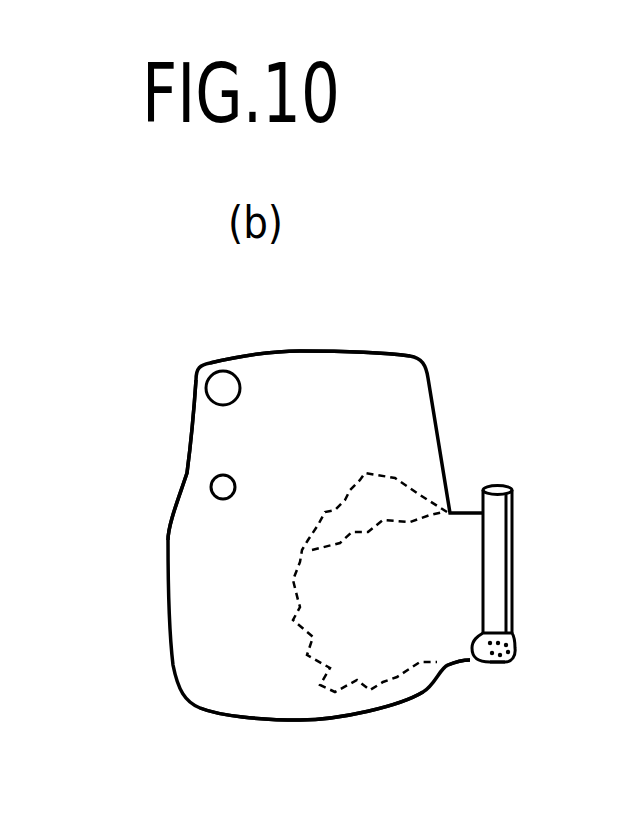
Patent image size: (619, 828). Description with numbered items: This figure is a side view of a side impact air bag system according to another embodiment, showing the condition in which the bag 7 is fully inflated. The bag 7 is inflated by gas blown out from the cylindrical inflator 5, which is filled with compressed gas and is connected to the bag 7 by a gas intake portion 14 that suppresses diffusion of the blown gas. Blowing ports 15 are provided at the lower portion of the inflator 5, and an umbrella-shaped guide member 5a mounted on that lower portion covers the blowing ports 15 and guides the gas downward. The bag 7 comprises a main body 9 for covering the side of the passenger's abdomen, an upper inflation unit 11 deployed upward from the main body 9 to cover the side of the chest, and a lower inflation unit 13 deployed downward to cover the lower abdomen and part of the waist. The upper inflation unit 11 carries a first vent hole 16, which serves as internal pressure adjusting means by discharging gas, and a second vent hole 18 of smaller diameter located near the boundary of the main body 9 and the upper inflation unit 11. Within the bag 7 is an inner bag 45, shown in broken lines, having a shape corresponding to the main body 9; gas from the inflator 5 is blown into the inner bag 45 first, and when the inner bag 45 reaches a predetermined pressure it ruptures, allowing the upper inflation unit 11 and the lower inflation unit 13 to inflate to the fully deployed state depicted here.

The inflator 5 is at (498, 507).
The guide member 5a is at (517, 637).
The bag 7 is at (150, 645).
The main body 9 is at (200, 566).
The upper inflation unit 11 is at (308, 370).
The lower inflation unit 13 is at (305, 702).
The gas intake portion 14 is at (465, 650).
The blowing ports 15 is at (507, 665).
The first vent hole 16 is at (225, 382).
The second vent hole 18 is at (215, 487).
The inner bag 45 is at (387, 702).